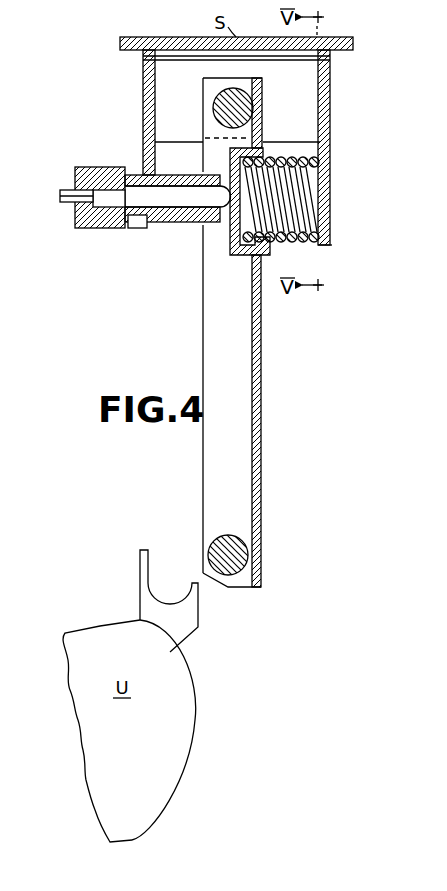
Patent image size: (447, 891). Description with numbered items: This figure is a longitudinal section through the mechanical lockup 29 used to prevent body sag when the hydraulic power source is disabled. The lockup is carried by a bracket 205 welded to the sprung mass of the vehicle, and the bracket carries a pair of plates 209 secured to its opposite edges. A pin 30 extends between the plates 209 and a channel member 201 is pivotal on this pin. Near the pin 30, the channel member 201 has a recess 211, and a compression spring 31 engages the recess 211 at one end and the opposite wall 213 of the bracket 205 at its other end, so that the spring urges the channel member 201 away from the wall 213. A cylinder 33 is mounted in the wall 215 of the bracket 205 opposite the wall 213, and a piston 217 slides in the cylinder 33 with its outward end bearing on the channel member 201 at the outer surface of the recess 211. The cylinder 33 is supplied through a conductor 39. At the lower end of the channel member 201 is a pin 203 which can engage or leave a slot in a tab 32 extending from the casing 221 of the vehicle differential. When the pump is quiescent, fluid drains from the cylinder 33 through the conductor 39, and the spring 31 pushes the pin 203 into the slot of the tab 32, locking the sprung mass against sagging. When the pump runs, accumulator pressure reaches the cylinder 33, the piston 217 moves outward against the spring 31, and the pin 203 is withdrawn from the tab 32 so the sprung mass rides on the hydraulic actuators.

The mechanical lockup 29 is at (218, 374).
The pin 30 is at (228, 114).
The compression spring 31 is at (282, 244).
The tab 32 is at (141, 585).
The cylinder 33 is at (192, 173).
The conductor 39 is at (74, 206).
The channel member 201 is at (261, 426).
The pin 203 is at (228, 538).
The bracket 205 is at (333, 153).
The plates 209 is at (163, 94).
The recess 211 is at (234, 250).
The wall 213 is at (330, 118).
The wall 215 is at (143, 130).
The piston 217 is at (181, 222).
The casing 221 is at (274, 143).